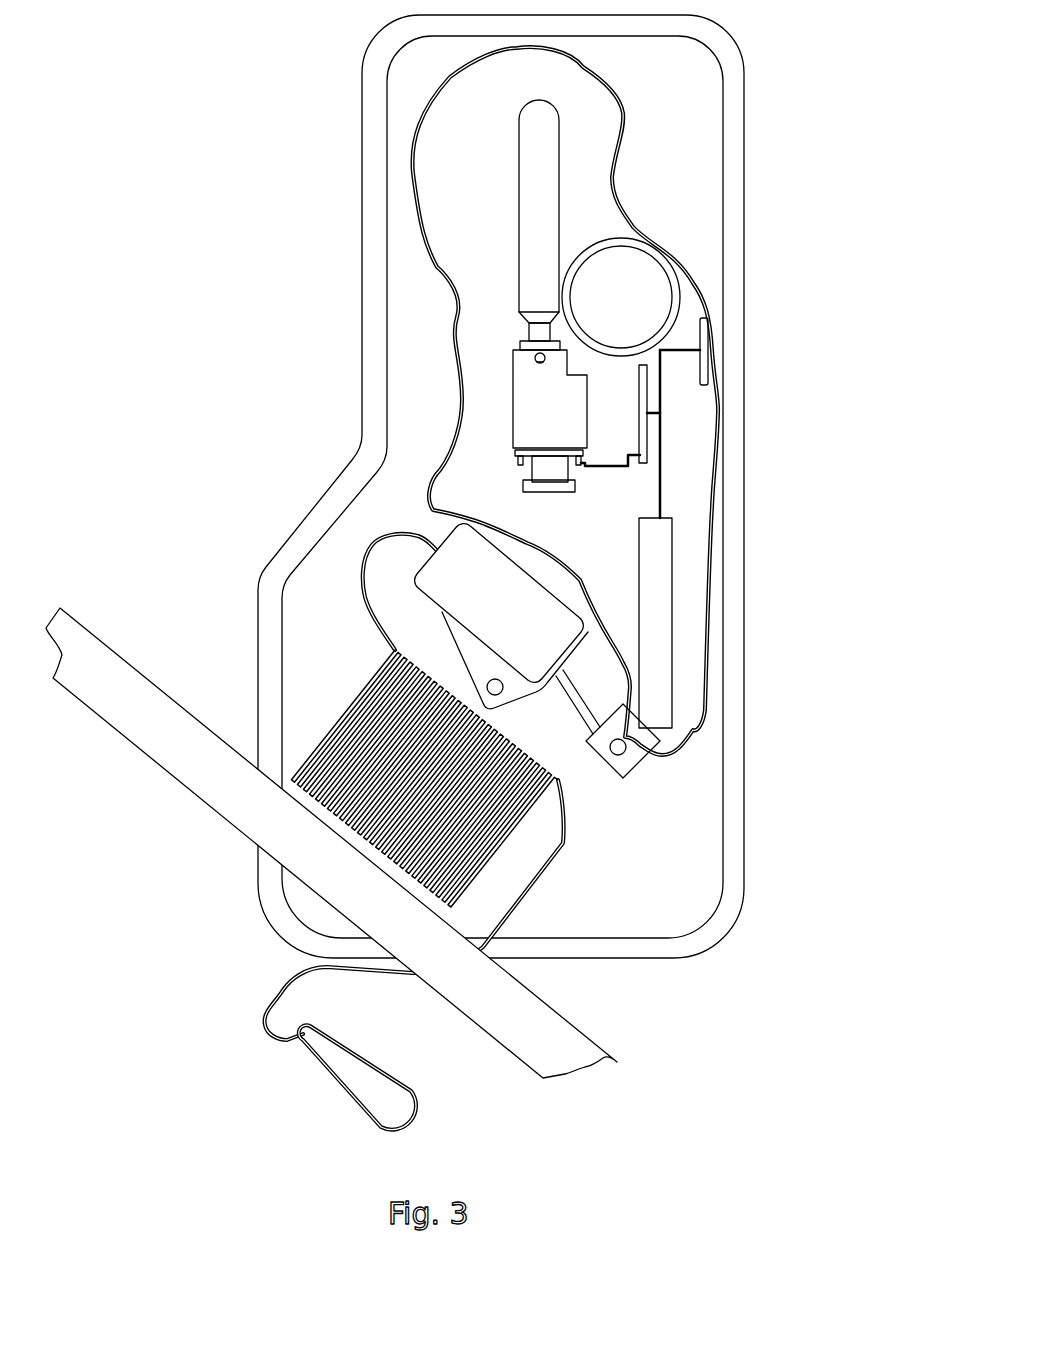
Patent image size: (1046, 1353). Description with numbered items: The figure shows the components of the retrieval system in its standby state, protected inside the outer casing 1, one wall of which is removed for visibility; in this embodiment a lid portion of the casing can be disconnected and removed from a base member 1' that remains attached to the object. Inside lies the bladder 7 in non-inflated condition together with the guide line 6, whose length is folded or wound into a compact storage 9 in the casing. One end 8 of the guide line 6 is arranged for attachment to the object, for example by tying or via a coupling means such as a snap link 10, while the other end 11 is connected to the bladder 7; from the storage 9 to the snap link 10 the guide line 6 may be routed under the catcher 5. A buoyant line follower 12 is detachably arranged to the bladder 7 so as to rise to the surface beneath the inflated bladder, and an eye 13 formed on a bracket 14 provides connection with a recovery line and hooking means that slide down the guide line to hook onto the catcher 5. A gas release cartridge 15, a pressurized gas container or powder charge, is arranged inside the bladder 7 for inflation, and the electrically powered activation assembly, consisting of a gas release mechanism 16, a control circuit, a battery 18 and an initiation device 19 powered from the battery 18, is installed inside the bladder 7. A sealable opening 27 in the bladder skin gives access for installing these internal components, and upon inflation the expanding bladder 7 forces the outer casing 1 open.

The outer casing 1 is at (479, 486).
The base member 1' is at (605, 873).
The catcher 5 is at (553, 1018).
The guide line 6 is at (378, 627).
The bladder 7 is at (458, 420).
The end of guide line 8 is at (272, 1042).
The storage 9 is at (317, 748).
The snap link 10 is at (357, 1123).
The other end of guide line 11 is at (592, 730).
The line follower 12 is at (433, 607).
The eye 13 is at (500, 682).
The bracket 14 is at (510, 697).
The gas release cartridge 15 is at (518, 200).
The gas release mechanism 16 is at (513, 400).
The battery 18 is at (672, 622).
The initiation device 19 is at (708, 337).
The sealable opening 27 is at (648, 277).